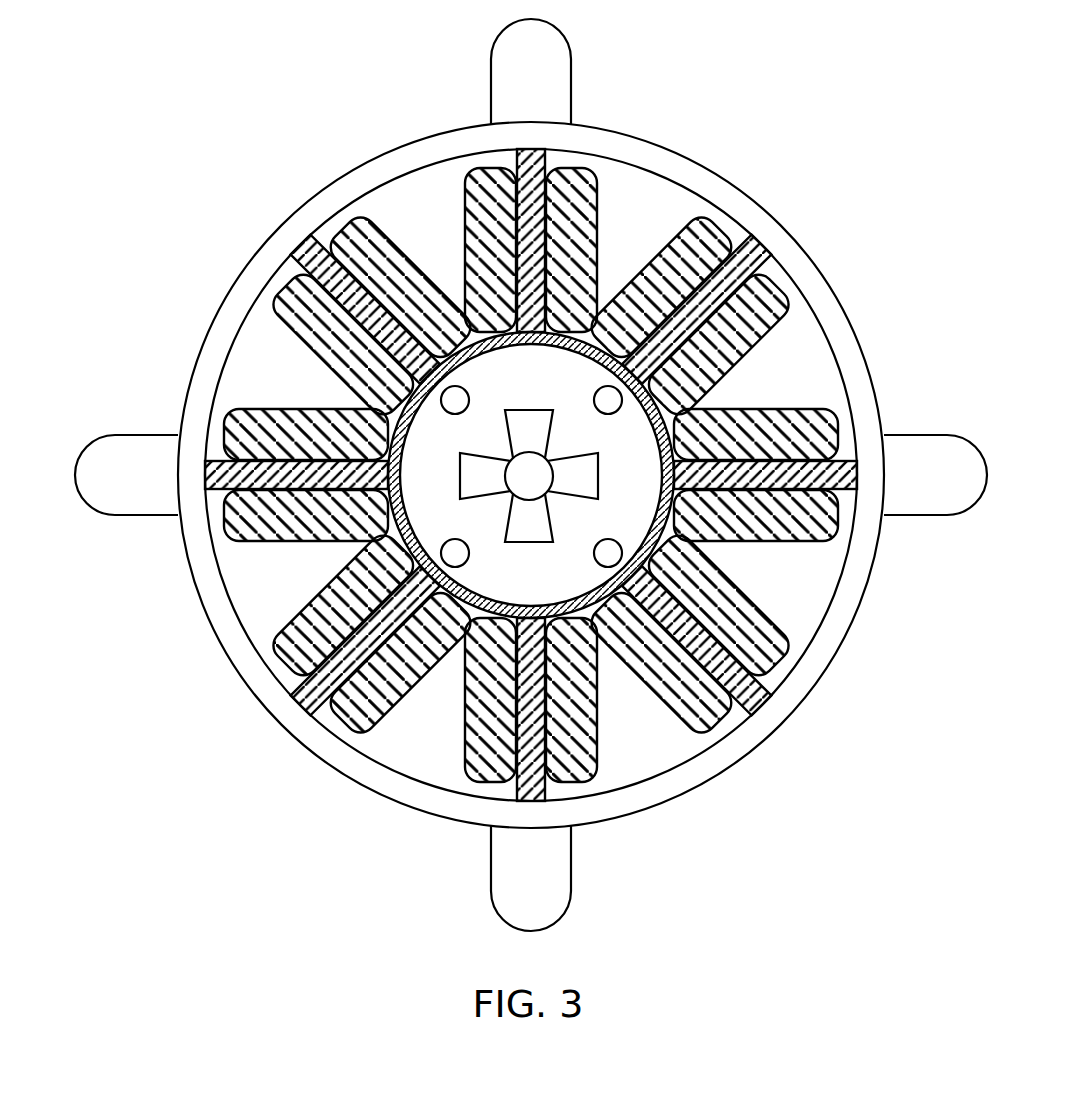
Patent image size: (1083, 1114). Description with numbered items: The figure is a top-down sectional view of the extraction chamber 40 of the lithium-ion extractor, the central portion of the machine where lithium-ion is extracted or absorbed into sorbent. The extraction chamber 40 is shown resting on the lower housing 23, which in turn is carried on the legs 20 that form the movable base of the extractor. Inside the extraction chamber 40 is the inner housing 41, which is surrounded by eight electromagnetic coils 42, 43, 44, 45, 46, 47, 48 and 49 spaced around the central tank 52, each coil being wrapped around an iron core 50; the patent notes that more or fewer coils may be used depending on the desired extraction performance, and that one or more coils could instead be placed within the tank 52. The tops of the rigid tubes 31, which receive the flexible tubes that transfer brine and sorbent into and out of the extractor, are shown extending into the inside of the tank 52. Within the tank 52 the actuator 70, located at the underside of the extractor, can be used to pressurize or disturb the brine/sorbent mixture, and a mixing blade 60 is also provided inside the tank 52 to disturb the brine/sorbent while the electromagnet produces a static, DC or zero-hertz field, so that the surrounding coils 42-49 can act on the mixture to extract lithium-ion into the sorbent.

The legs 20 is at (122, 433).
The lower housing 23 is at (228, 605).
The rigid tubes 31 is at (438, 553).
The extraction chamber 40 is at (812, 86).
The inner housing 41 is at (340, 713).
The electromagnetic coil 42 is at (280, 662).
The electromagnetic coil 43 is at (462, 773).
The electromagnetic coil 44 is at (787, 650).
The electromagnetic coil 45 is at (837, 413).
The electromagnetic coil 46 is at (717, 225).
The electromagnetic coil 47 is at (595, 178).
The electromagnetic coil 48 is at (283, 293).
The electromagnetic coil 49 is at (273, 405).
The iron core 50 is at (208, 457).
The tank 52 is at (562, 391).
The mixing blade 60 is at (525, 410).
The actuator 70 is at (548, 481).